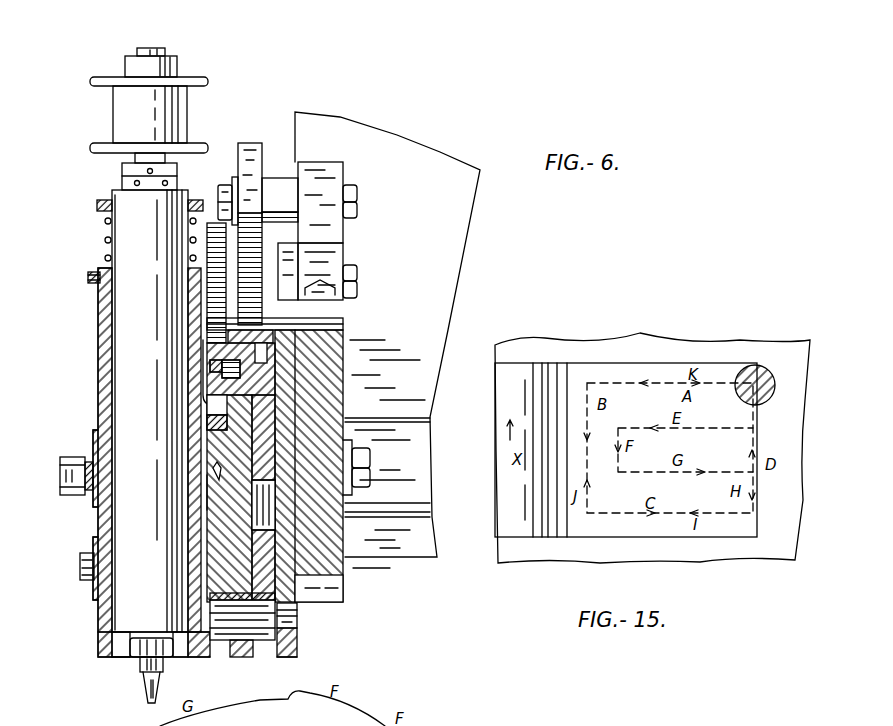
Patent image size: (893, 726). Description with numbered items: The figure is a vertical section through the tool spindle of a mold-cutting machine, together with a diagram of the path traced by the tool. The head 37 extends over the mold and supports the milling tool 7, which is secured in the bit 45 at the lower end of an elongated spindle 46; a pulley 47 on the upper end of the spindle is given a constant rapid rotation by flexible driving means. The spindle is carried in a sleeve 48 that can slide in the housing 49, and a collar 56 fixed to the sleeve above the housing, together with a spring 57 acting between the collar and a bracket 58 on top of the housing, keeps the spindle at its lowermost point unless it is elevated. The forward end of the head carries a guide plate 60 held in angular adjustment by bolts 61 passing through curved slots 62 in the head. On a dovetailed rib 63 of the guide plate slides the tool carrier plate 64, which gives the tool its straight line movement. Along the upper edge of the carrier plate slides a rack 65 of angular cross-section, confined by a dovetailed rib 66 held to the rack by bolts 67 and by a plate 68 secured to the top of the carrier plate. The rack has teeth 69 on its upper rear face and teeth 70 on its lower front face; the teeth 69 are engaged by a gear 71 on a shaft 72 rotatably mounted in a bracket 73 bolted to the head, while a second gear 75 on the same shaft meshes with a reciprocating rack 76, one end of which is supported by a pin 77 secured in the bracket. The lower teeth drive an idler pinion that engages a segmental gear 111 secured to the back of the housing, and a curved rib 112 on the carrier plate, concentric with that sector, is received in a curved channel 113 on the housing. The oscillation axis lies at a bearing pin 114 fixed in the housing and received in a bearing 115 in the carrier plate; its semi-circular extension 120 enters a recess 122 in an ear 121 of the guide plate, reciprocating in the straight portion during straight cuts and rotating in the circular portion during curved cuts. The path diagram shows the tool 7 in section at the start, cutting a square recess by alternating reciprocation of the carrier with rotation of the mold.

In FIG. 6, the milling tool 7 is at (148, 695).
In FIG. 15, the milling tool 7 is at (768, 378).
In FIG. 6, the head 37 is at (415, 372).
In FIG. 6, the bit 45 is at (140, 665).
In FIG. 6, the spindle 46 is at (165, 57).
In FIG. 6, the pulley 47 is at (187, 125).
In FIG. 6, the sleeve 48 is at (130, 242).
In FIG. 6, the housing 49 is at (98, 308).
In FIG. 6, the collar 56 is at (88, 272).
In FIG. 6, the spring 57 is at (104, 222).
In FIG. 6, the bracket 58 is at (97, 205).
In FIG. 6, the guide plate 60 is at (345, 578).
In FIG. 6, the bolts 61 is at (370, 470).
In FIG. 6, the curved slots 62 is at (345, 405).
In FIG. 6, the dovetailed rib 63 is at (290, 400).
In FIG. 6, the tool carrier plate 64 is at (200, 530).
In FIG. 6, the rack 65 is at (210, 360).
In FIG. 6, the dovetailed rib 66 is at (250, 365).
In FIG. 6, the bolts 67 is at (200, 380).
In FIG. 6, the plate 68 is at (300, 328).
In FIG. 6, the teeth 69 is at (210, 348).
In FIG. 6, the teeth 70 is at (217, 405).
In FIG. 6, the gear 71 is at (213, 224).
In FIG. 6, the shaft 72 is at (357, 280).
In FIG. 6, the bracket 73 is at (328, 270).
In FIG. 6, the second gear 75 is at (252, 250).
In FIG. 6, the reciprocating rack 76 is at (255, 155).
In FIG. 6, the pin 77 is at (223, 185).
In FIG. 6, the segmental gear 111 is at (205, 430).
In FIG. 6, the curved rib 112 is at (207, 500).
In FIG. 6, the curved channel 113 is at (212, 475).
In FIG. 6, the bearing pin 114 is at (232, 628).
In FIG. 6, the bearing 115 is at (250, 648).
In FIG. 6, the extension 120 is at (297, 615).
In FIG. 6, the ear 121 is at (292, 655).
In FIG. 6, the recess 122 is at (295, 630).